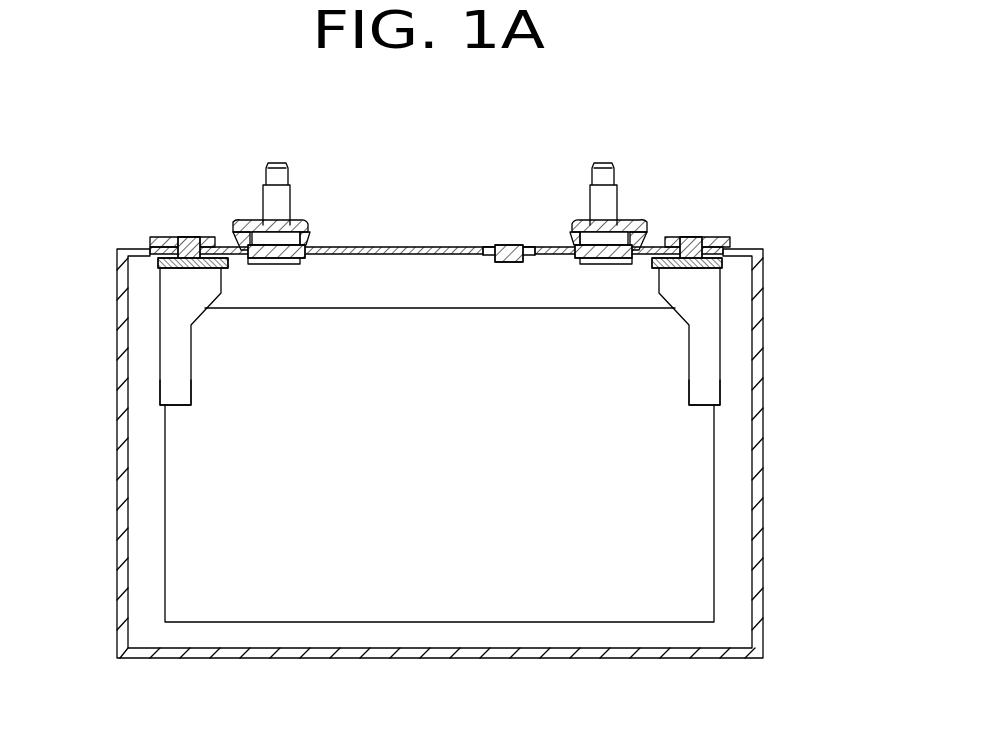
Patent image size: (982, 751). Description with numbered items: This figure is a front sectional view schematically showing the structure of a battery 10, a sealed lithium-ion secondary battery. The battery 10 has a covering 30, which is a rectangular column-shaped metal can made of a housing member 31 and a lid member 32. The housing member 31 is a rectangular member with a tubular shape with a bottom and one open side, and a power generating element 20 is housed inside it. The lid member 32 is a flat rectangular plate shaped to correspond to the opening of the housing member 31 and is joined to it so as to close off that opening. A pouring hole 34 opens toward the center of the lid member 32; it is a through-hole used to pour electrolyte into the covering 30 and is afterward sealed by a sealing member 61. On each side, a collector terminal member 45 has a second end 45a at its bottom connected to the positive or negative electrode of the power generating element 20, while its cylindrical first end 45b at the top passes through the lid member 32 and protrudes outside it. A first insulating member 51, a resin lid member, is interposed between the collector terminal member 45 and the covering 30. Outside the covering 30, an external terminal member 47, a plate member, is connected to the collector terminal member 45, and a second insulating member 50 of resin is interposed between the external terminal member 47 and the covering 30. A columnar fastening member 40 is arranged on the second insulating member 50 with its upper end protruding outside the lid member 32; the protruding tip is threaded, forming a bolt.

The battery 10 is at (126, 152).
The power generating element 20 is at (190, 470).
The covering 30 is at (390, 435).
The housing member 31 is at (121, 262).
The lid member 32 is at (150, 247).
The pouring hole 34 is at (505, 262).
The fastening member 40 is at (284, 202).
The collector terminal member 45 is at (240, 296).
The second end 45a is at (172, 379).
The first end 45b is at (198, 237).
The external terminal member 47 is at (246, 226).
The second insulating member 50 is at (311, 251).
The first insulating member 51 is at (160, 268).
The sealing member 61 is at (507, 245).